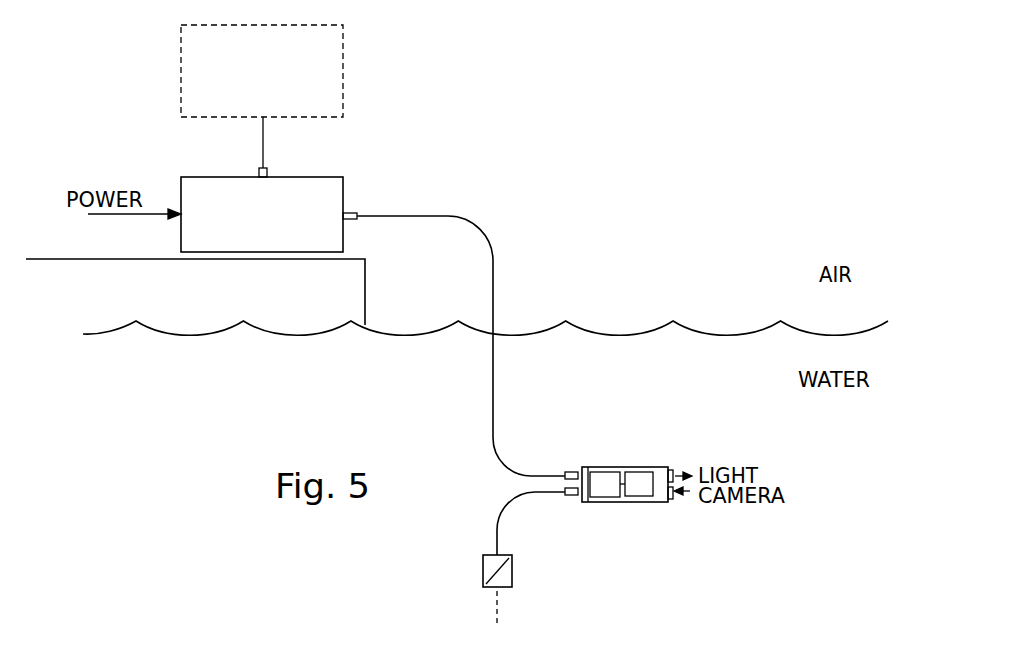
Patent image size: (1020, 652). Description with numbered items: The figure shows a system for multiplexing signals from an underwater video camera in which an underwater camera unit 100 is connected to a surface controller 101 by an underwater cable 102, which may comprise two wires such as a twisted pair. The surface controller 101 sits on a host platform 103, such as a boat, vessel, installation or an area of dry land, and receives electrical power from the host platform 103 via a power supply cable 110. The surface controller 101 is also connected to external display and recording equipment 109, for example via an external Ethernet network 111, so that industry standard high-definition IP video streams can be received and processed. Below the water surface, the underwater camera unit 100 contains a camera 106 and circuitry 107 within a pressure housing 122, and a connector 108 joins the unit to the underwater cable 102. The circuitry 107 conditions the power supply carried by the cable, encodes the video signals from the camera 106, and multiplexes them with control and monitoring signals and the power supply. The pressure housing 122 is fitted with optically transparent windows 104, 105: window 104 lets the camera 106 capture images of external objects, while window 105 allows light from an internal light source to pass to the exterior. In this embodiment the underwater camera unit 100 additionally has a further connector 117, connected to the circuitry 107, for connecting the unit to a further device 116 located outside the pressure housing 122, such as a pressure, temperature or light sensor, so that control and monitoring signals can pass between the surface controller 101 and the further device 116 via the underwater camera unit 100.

The underwater camera unit 100 is at (628, 466).
The surface controller 101 is at (328, 178).
The underwater cable 102 is at (410, 213).
The host platform 103 is at (52, 259).
The window 104 is at (671, 499).
The window 105 is at (671, 468).
The camera 106 is at (643, 488).
The circuitry 107 is at (608, 487).
The connector 108 is at (576, 470).
The display and recording equipment 109 is at (343, 47).
The power supply cable 110 is at (155, 212).
The external Ethernet network 111 is at (262, 145).
The further device 116 is at (490, 552).
The further connector 117 is at (574, 498).
The pressure housing 122 is at (591, 506).